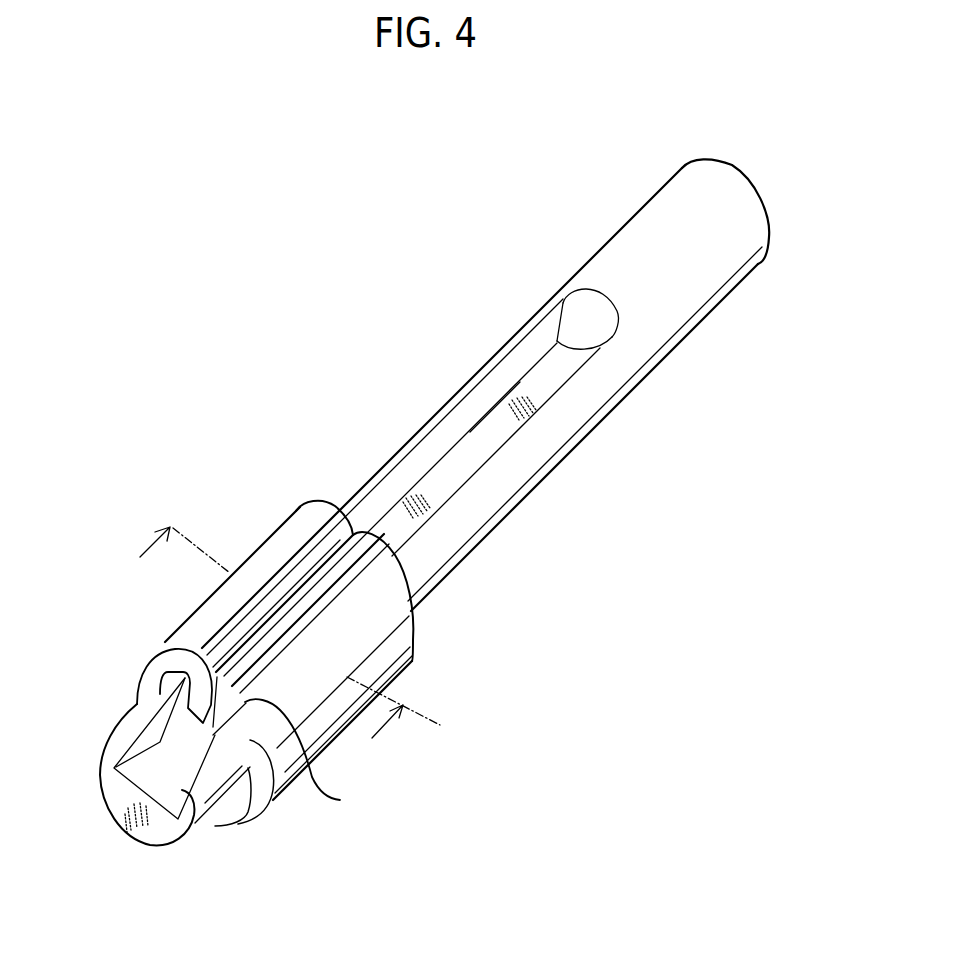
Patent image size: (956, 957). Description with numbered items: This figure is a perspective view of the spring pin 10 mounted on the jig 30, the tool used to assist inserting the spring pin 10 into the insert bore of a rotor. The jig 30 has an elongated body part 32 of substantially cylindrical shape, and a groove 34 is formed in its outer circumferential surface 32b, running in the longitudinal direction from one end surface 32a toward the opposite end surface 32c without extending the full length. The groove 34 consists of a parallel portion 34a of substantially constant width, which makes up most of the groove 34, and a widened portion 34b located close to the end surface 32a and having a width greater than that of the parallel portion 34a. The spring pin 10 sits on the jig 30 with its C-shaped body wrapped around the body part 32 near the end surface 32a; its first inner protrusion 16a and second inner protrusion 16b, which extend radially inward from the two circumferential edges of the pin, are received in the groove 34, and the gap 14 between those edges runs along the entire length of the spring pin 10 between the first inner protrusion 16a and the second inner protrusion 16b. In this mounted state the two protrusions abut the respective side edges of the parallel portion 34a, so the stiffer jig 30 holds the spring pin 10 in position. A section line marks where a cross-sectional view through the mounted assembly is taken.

The spring pin 10 is at (436, 680).
The gap 14 is at (341, 532).
The first inner protrusion 16a is at (192, 683).
The second inner protrusion 16b is at (340, 800).
The jig 30 is at (620, 478).
The body part 32 is at (626, 229).
The end surface 32a is at (122, 802).
The outer circumferential surface 32b is at (673, 327).
The opposite end surface 32c is at (786, 214).
The groove 34 is at (526, 352).
The parallel portion 34a is at (448, 447).
The widened portion 34b is at (158, 792).